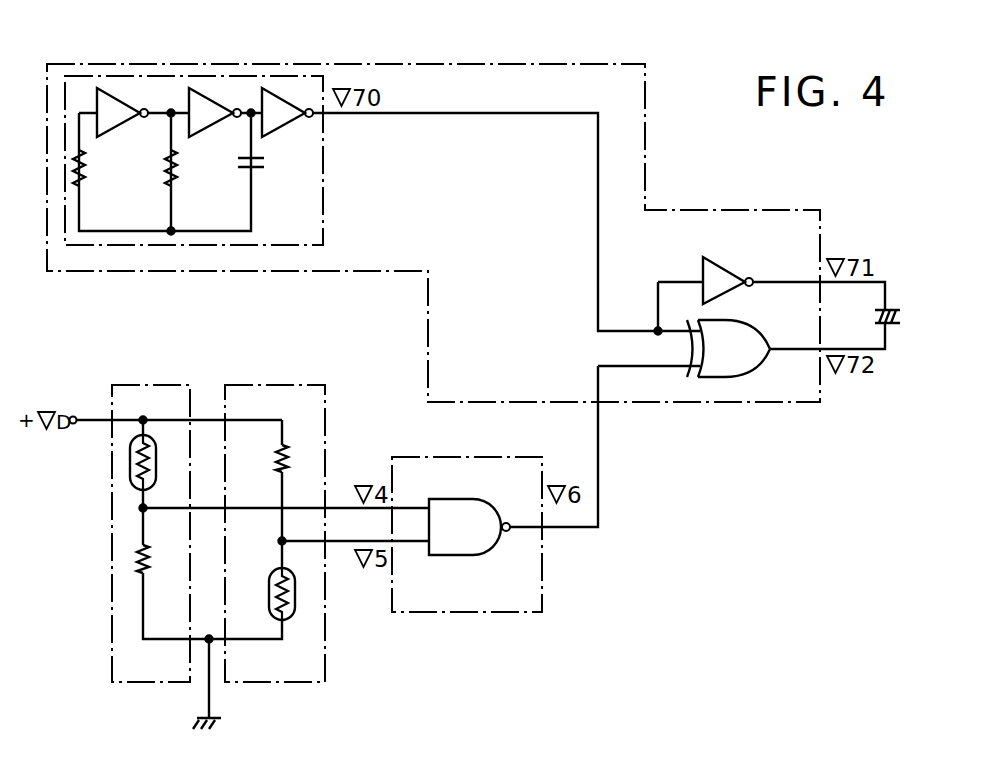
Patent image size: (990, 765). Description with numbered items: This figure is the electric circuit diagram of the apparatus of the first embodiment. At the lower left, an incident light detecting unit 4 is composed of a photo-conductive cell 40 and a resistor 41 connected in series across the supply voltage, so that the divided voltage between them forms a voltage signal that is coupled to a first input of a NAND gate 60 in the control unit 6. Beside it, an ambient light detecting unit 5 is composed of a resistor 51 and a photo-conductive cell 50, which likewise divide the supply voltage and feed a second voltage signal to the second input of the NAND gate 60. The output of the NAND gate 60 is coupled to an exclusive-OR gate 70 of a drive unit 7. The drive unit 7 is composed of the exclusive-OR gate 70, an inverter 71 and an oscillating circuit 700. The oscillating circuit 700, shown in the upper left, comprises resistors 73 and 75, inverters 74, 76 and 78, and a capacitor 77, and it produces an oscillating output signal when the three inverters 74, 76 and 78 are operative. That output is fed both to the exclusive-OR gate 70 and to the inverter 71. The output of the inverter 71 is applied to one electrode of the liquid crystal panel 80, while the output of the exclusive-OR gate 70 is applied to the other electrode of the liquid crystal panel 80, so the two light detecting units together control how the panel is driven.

The incident light detecting unit 4 is at (112, 632).
The ambient light detecting unit 5 is at (325, 651).
The control unit 6 is at (525, 612).
The drive unit 7 is at (697, 210).
The photo-conductive cell 40 is at (130, 466).
The resistor 41 is at (136, 562).
The photo-conductive cell 50 is at (271, 572).
The resistor 51 is at (272, 456).
The NAND gate 60 is at (477, 556).
The exclusive-OR gate 70 is at (761, 326).
The inverter 71 is at (728, 258).
The resistor 73 is at (90, 167).
The inverter 74 is at (118, 125).
The resistor 75 is at (180, 165).
The inverter 76 is at (217, 97).
The capacitor 77 is at (267, 163).
The inverter 78 is at (288, 98).
The liquid crystal panel 80 is at (908, 317).
The oscillating circuit 700 is at (324, 222).